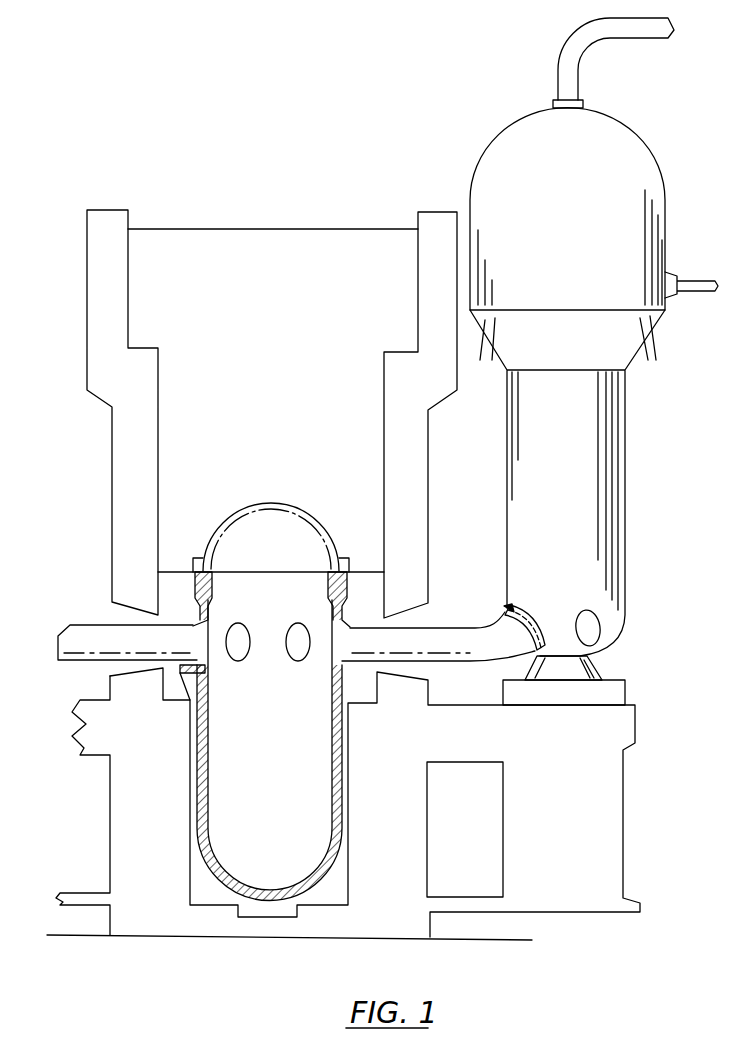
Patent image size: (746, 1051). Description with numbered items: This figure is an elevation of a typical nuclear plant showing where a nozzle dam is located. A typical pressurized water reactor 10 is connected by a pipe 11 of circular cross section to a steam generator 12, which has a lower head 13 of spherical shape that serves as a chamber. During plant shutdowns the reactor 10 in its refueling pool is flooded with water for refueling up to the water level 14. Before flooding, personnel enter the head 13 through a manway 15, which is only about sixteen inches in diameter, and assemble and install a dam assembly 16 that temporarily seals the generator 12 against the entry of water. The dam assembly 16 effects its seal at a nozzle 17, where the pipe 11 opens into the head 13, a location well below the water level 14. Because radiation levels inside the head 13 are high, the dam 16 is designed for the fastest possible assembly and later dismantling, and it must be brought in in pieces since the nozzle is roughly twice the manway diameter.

The pressurized water reactor 10 is at (201, 791).
The pipe 11 is at (480, 674).
The steam generator 12 is at (597, 433).
The lower head 13 is at (622, 636).
The water level 14 is at (301, 229).
The manway 15 is at (590, 626).
The dam assembly 16 is at (503, 605).
The nozzle 17 is at (530, 617).